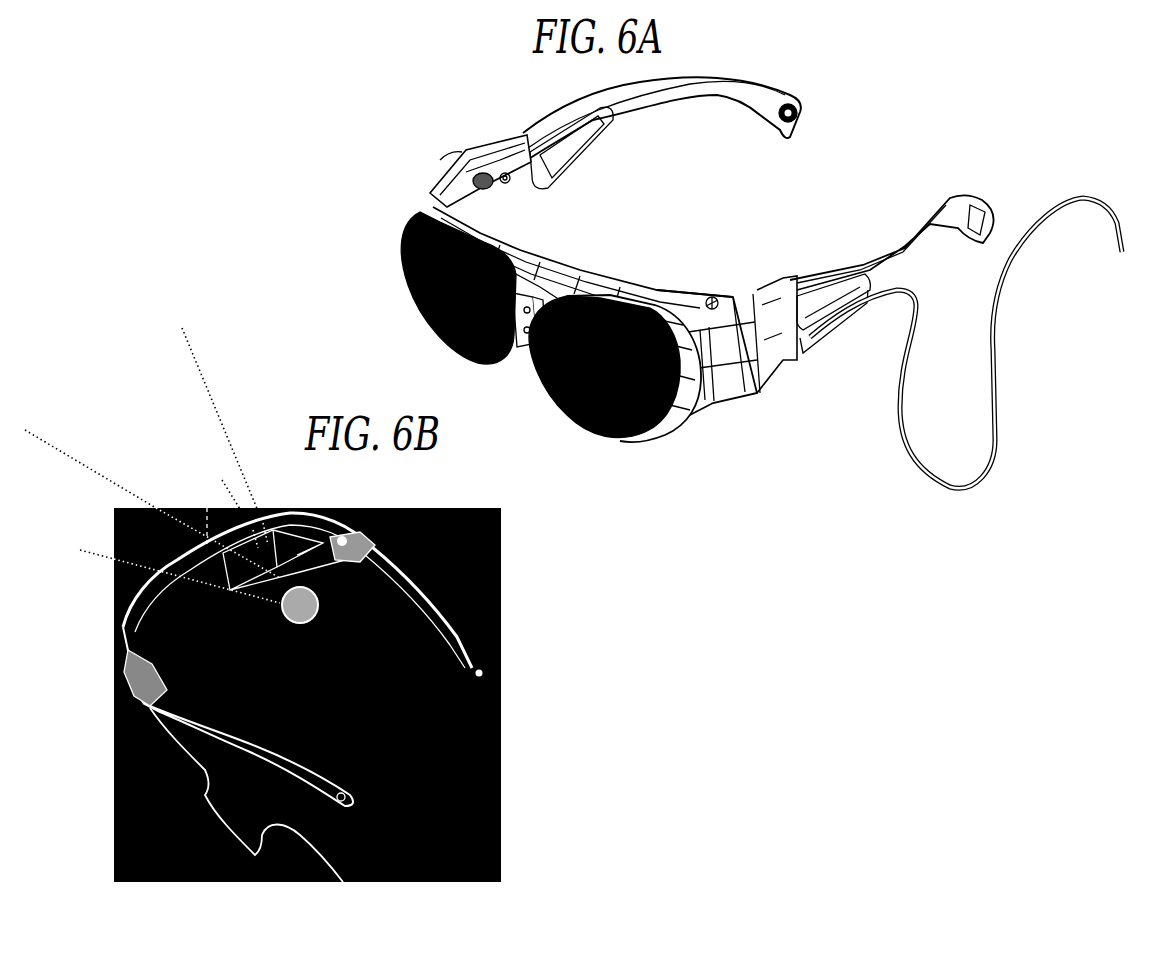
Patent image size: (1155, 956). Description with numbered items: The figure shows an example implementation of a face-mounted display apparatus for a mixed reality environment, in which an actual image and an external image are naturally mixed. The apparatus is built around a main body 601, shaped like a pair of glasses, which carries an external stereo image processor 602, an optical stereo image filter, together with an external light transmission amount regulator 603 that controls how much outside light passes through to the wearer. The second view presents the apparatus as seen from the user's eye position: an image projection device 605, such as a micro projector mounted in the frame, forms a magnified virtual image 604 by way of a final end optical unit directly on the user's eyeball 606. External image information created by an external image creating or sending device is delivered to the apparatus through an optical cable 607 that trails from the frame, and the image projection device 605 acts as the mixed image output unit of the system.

In FIG. 6A, the main body 601 is at (713, 410).
In FIG. 6A, the external stereo image processor 602 is at (655, 430).
In FIG. 6A, the external light transmission amount regulator 603 is at (622, 442).
In FIG. 6B, the magnified virtual image 604 is at (253, 490).
In FIG. 6B, the image projection device 605 is at (345, 543).
In FIG. 6B, the user's eyeball 606 is at (326, 637).
In FIG. 6B, the optical cable 607 is at (313, 842).